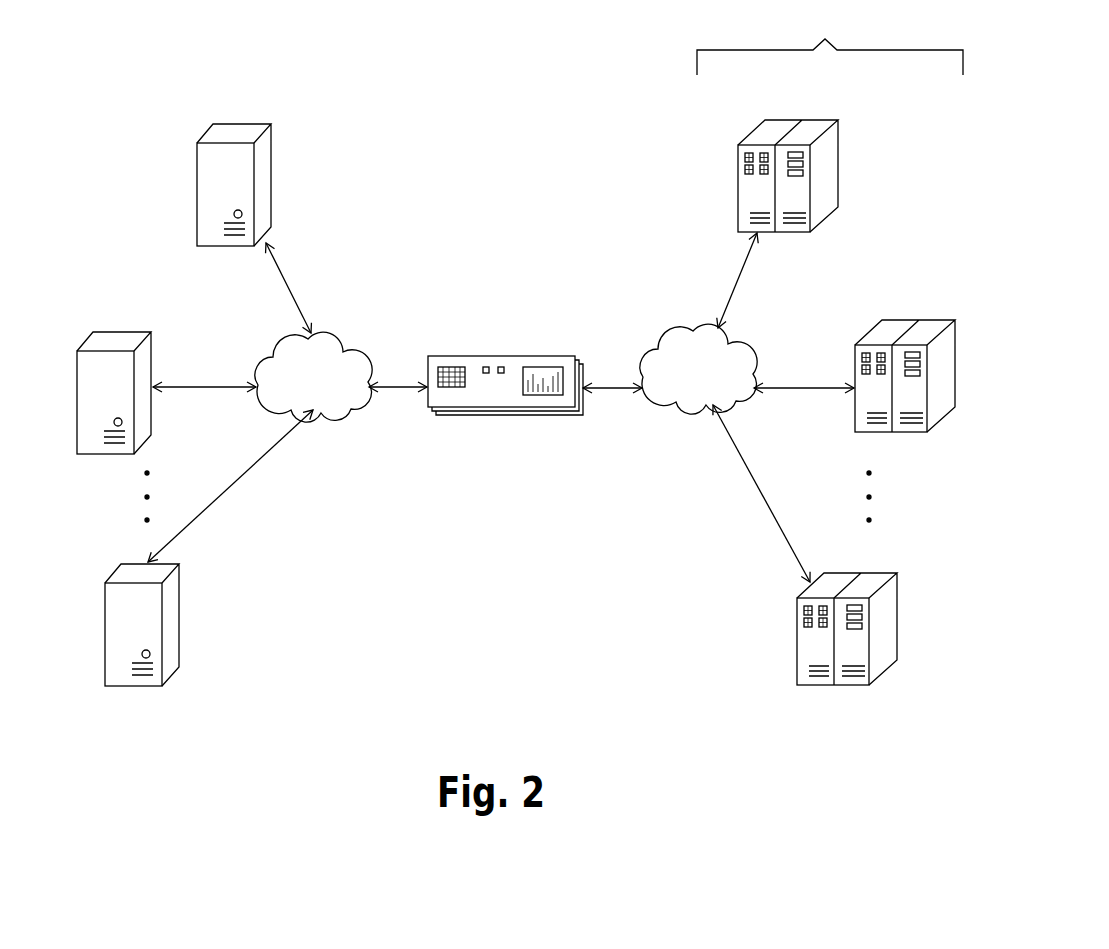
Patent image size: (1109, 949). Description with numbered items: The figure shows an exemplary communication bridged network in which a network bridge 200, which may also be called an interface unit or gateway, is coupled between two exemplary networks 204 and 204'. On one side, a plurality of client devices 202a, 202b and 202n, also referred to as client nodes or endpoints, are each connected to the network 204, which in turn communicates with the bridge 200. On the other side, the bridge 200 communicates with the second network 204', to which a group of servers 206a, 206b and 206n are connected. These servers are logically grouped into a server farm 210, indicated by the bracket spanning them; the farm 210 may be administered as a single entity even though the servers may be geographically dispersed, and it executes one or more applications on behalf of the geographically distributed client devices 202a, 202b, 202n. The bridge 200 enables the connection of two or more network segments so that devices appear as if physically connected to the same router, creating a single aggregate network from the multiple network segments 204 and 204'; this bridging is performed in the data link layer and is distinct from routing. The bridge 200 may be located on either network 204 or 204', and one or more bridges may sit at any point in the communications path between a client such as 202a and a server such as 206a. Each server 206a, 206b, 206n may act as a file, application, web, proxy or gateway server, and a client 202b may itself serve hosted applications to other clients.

The network bridge 200 is at (472, 330).
The client device 202a is at (258, 123).
The client device 202b is at (137, 333).
The client device 202n is at (105, 687).
The network 204 is at (313, 377).
The network 204' is at (698, 369).
The server 206a is at (823, 120).
The server 206b is at (940, 320).
The server 206n is at (887, 573).
The server farm 210 is at (829, 40).